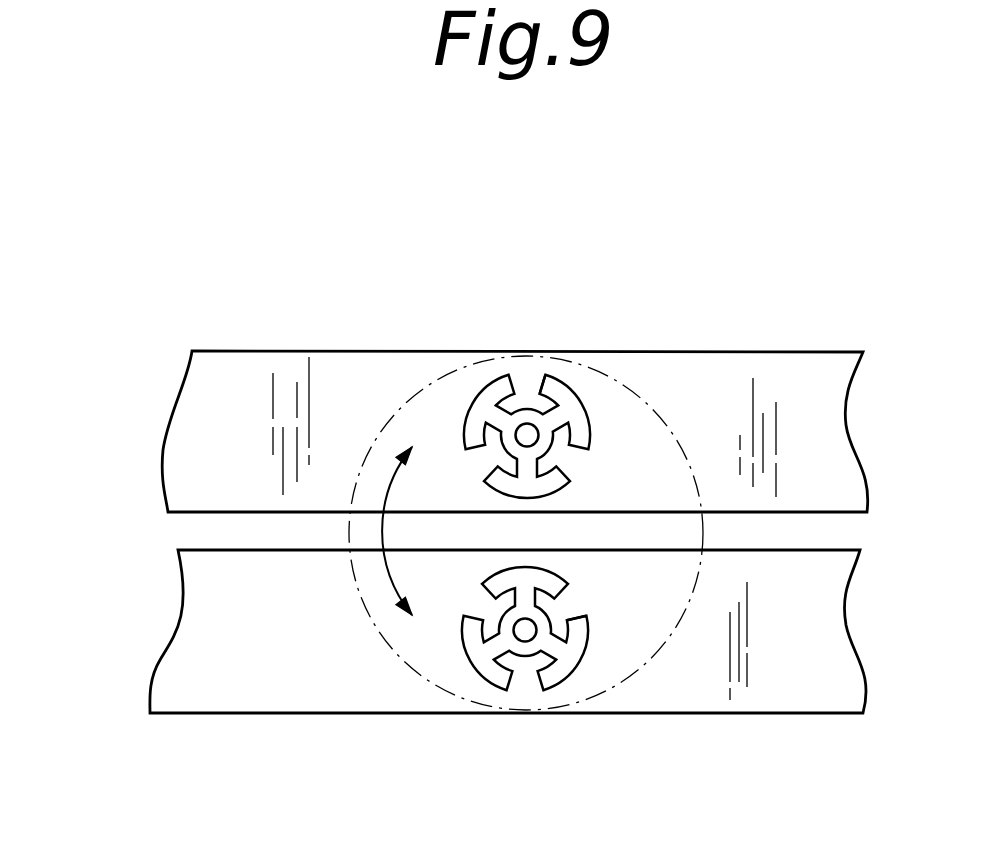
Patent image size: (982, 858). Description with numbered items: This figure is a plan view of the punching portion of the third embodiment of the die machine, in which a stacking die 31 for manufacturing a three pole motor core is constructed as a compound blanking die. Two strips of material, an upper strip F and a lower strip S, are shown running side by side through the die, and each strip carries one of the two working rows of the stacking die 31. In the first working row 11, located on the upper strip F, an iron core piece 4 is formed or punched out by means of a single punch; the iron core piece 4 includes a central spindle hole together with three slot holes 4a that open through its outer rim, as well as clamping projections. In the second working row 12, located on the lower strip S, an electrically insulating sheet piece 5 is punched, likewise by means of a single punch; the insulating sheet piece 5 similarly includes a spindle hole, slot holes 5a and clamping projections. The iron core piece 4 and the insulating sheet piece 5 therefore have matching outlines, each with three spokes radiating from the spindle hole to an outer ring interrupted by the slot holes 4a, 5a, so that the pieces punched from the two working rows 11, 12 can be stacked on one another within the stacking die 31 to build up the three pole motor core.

The first working row 11 is at (213, 349).
The second working row 12 is at (210, 716).
The film F is at (213, 433).
The substrate S is at (227, 625).
The iron core piece 4 is at (526, 374).
The slot holes 4a is at (548, 398).
The electrically insulating sheet piece 5 is at (547, 688).
The slot holes 5a is at (567, 627).
The stacking die 31 is at (590, 395).